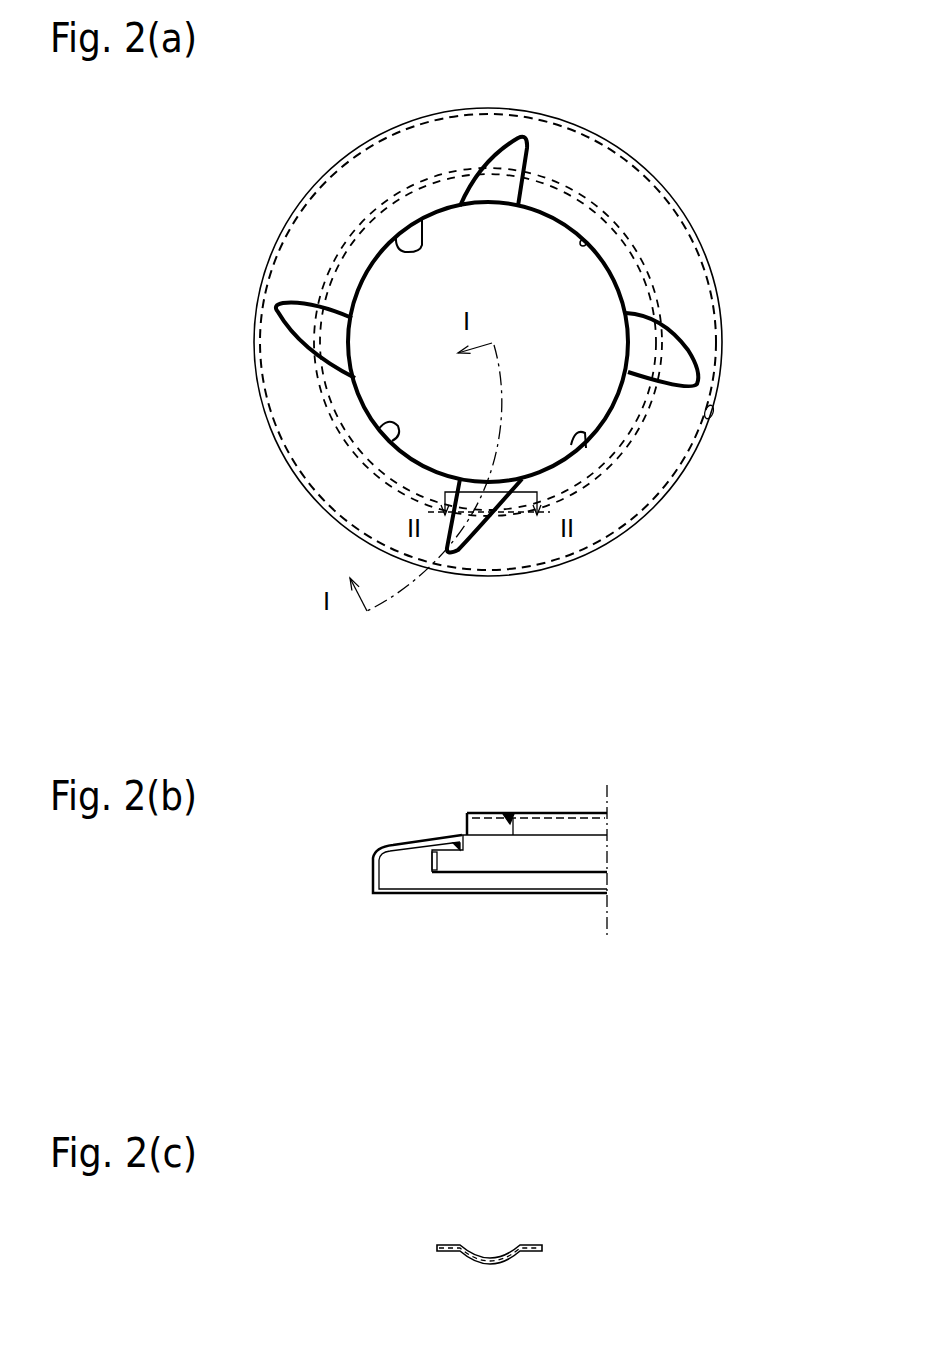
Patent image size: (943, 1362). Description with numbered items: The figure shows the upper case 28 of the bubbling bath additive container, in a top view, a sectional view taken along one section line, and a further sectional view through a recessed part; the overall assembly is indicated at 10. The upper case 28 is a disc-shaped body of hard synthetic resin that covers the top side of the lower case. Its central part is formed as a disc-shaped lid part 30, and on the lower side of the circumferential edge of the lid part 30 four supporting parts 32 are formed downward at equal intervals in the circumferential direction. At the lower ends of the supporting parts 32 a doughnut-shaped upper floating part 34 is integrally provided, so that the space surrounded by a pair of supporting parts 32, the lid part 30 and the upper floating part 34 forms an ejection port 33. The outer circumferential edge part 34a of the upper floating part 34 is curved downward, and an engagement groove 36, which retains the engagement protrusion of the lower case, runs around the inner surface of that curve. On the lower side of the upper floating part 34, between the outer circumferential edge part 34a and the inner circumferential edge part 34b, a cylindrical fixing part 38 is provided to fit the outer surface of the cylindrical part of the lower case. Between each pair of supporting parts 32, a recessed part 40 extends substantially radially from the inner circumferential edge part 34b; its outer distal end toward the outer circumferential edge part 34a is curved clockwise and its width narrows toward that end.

In FIG. 2A, the cap assembly 10 is at (560, 82).
In FIG. 2A, the upper case 28 is at (627, 152).
In FIG. 2A, the lid part 30 is at (629, 394).
In FIG. 2B, the lid part 30 is at (550, 812).
In FIG. 2A, the supporting parts 32 is at (421, 226).
In FIG. 2B, the supporting parts 32 is at (490, 813).
In FIG. 2A, the ejection port 33 is at (412, 463).
In FIG. 2B, the ejection port 33 is at (585, 823).
In FIG. 2A, the upper floating part 34 is at (677, 251).
In FIG. 2B, the upper floating part 34 is at (447, 835).
In FIG. 2C, the upper floating part 34 is at (535, 1243).
In FIG. 2A, the outer circumferential edge part 34a is at (721, 321).
In FIG. 2B, the outer circumferential edge part 34a is at (373, 863).
In FIG. 2A, the inner circumferential edge part 34b is at (443, 190).
In FIG. 2A, the engagement groove 36 is at (718, 398).
In FIG. 2B, the engagement groove 36 is at (385, 890).
In FIG. 2A, the cylindrical fixing part 38 is at (350, 235).
In FIG. 2B, the cylindrical fixing part 38 is at (547, 863).
In FIG. 2A, the recessed part 40 is at (643, 303).
In FIG. 2B, the recessed part 40 is at (460, 868).
In FIG. 2C, the recessed part 40 is at (490, 1256).